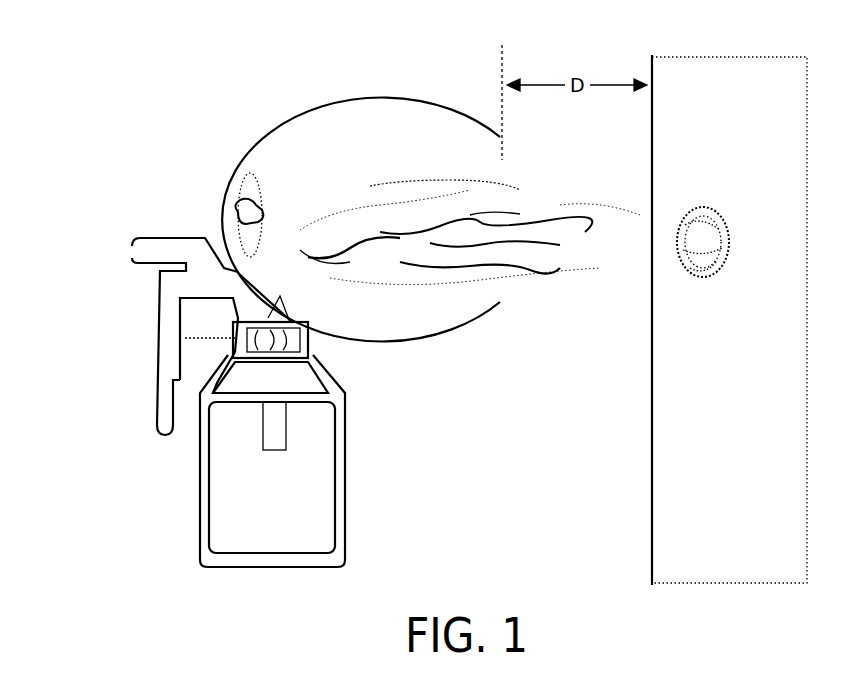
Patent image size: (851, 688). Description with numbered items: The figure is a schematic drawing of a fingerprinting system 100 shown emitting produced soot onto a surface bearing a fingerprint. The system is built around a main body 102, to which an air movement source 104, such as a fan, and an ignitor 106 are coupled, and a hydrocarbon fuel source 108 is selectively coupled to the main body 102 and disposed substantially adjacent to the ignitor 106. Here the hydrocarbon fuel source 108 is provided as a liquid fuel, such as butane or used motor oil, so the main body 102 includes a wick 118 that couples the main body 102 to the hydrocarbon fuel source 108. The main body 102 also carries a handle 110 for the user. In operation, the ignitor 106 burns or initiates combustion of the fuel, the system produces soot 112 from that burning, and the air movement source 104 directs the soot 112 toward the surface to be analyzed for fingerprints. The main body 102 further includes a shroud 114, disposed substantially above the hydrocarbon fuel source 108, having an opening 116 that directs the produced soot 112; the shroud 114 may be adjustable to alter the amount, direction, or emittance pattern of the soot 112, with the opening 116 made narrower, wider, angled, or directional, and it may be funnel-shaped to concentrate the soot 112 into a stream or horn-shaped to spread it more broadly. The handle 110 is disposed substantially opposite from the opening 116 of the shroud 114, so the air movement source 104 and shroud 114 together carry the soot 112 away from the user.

The fingerprinting system 100 is at (105, 193).
The main body 102 is at (143, 321).
The air movement source 104 is at (242, 205).
The ignitor 106 is at (255, 350).
The hydrocarbon fuel source 108 is at (195, 522).
The handle 110 is at (156, 353).
The soot 112 is at (552, 290).
The shroud 114 is at (340, 97).
The opening 116 is at (514, 304).
The wick 118 is at (263, 440).